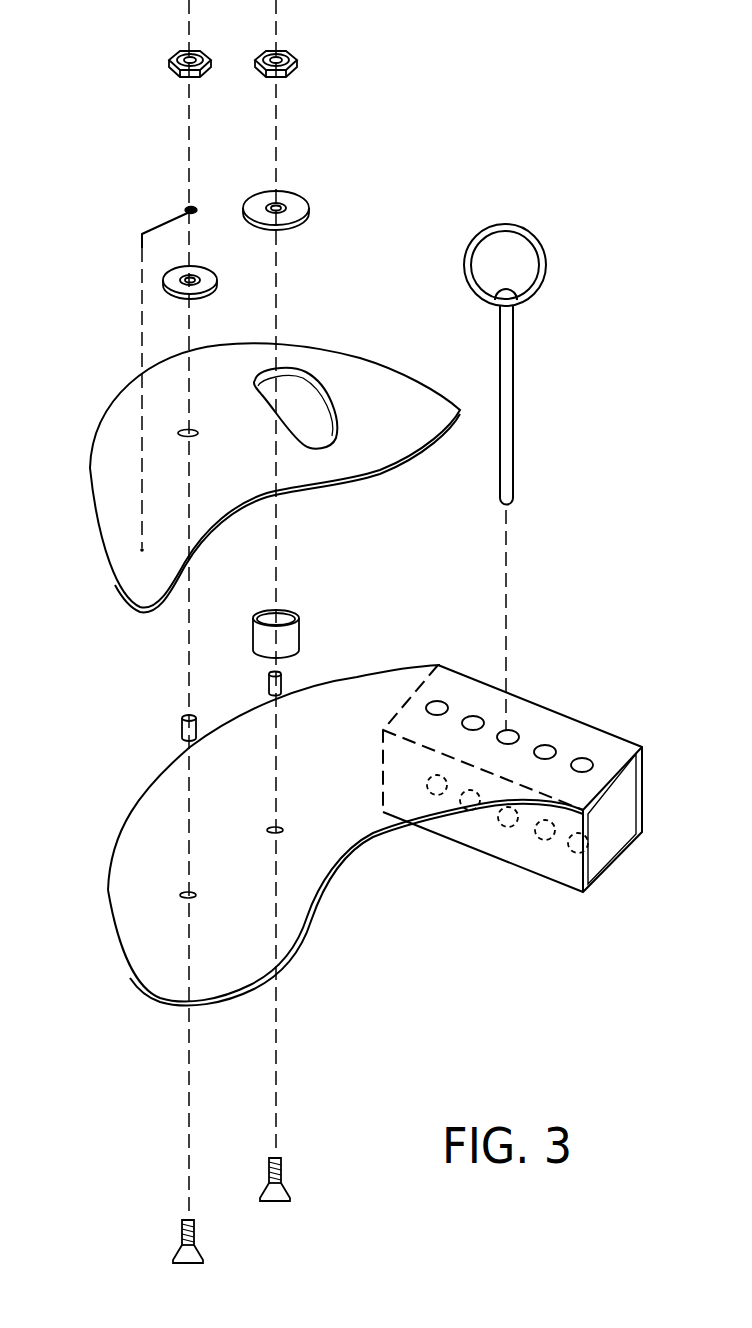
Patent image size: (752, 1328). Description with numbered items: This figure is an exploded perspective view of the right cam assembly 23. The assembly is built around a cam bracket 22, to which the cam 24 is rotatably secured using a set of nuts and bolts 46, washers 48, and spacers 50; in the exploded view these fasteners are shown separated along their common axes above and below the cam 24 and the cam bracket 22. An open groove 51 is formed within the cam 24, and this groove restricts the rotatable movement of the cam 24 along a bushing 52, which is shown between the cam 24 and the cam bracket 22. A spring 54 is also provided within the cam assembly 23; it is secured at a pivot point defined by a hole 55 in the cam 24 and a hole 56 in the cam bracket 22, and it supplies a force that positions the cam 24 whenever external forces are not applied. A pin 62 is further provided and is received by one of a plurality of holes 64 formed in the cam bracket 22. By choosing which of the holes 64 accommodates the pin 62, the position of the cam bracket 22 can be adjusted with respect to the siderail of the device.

The cam bracket 22 is at (370, 853).
The right cam assembly 23 is at (448, 164).
The cam 24 is at (93, 458).
The nuts and bolts 46 is at (254, 62).
The washers 48 is at (243, 209).
The spacers 50 is at (198, 727).
The open groove 51 is at (293, 400).
The bushing 52 is at (300, 636).
The spring 54 is at (163, 226).
The hole 55 is at (193, 440).
The hole 56 is at (190, 900).
The pin 62 is at (513, 423).
The holes 64 is at (443, 700).